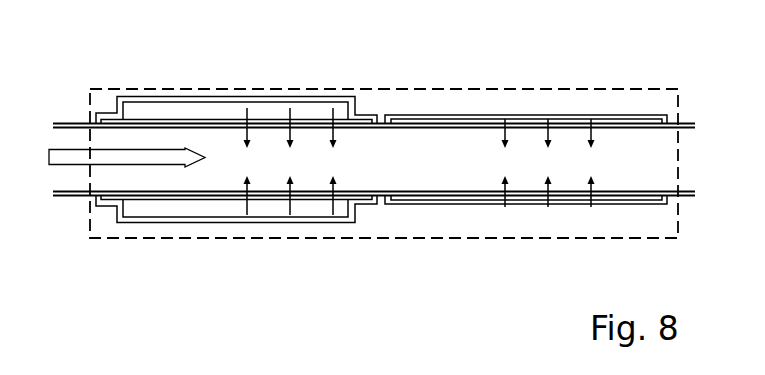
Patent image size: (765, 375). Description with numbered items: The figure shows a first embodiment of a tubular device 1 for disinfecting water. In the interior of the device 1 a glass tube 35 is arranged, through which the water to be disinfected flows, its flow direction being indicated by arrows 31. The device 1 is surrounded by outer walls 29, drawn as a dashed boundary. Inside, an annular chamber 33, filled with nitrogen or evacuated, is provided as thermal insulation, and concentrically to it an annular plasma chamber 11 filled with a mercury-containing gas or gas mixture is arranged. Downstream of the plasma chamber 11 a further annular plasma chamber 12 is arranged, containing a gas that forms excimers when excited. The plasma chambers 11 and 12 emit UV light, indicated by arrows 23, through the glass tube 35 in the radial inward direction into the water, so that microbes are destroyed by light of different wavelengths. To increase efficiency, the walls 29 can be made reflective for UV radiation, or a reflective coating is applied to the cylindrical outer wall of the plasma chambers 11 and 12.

The tubular device 1 is at (452, 73).
The plasma chamber 11 is at (232, 106).
The further annular plasma chamber 12 is at (525, 122).
The arrows 23 is at (332, 187).
The outer walls 29 is at (638, 90).
The arrows 31 is at (68, 167).
The annular chamber 33 is at (168, 120).
The glass tube 35 is at (73, 122).